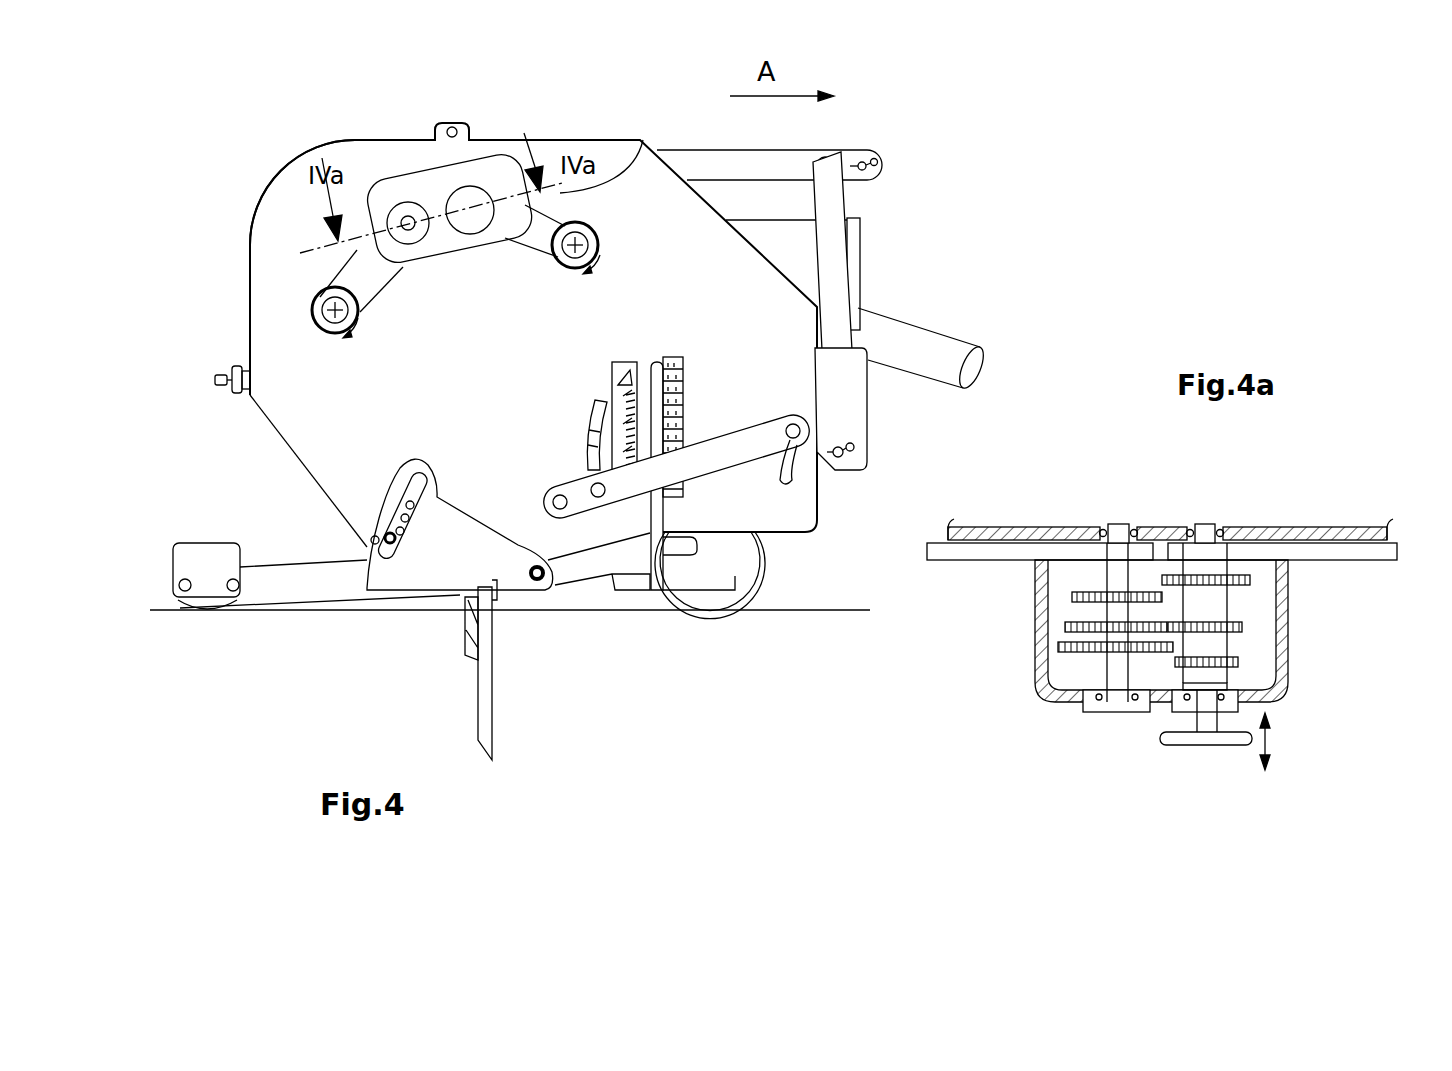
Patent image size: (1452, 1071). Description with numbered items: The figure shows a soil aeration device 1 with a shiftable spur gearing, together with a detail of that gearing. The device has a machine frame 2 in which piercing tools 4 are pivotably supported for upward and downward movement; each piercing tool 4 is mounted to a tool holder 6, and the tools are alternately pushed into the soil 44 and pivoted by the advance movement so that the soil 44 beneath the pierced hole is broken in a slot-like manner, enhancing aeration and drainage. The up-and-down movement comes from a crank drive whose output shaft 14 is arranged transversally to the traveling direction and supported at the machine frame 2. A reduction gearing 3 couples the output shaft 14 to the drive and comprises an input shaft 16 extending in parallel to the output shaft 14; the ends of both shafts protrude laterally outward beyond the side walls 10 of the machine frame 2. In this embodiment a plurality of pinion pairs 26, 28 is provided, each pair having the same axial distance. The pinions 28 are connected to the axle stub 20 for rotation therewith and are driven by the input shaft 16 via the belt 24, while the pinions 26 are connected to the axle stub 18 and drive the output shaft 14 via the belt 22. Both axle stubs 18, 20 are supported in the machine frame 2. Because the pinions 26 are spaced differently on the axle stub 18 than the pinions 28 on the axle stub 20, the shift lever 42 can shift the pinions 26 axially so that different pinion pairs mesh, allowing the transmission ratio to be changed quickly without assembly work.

In FIG. 4, the soil aeration device 1 is at (226, 154).
In FIG. 4, the machine frame 2 is at (307, 202).
In FIG. 4A, the machine frame 2 is at (1003, 530).
In FIG. 4, the reduction gearing 3 is at (400, 150).
In FIG. 4, the piercing tool 4 is at (487, 720).
In FIG. 4, the tool holder 6 is at (494, 590).
In FIG. 4, the side wall 10 is at (529, 341).
In FIG. 4, the output shaft 14 is at (596, 228).
In FIG. 4, the input shaft 16 is at (312, 309).
In FIG. 4A, the axle stub 18 is at (1198, 527).
In FIG. 4A, the axle stub 20 is at (1112, 527).
In FIG. 4, the belt 22 is at (643, 142).
In FIG. 4A, the belt 22 is at (1368, 548).
In FIG. 4, the belt 24 is at (340, 265).
In FIG. 4A, the belt 24 is at (946, 550).
In FIG. 4A, the pinion 26 is at (1060, 648).
In FIG. 4A, the pinion 28 is at (1238, 660).
In FIG. 4, the shift lever 42 is at (473, 190).
In FIG. 4A, the shift lever 42 is at (1210, 737).
In FIG. 4, the soil 44 is at (820, 628).